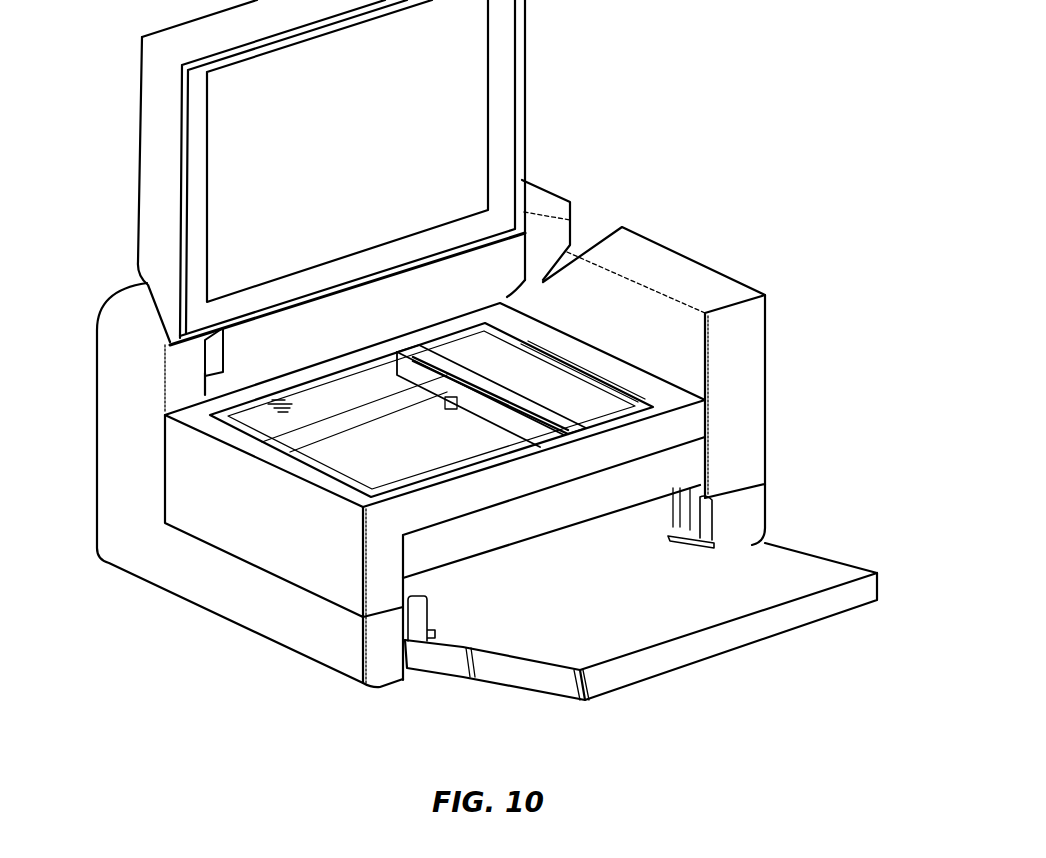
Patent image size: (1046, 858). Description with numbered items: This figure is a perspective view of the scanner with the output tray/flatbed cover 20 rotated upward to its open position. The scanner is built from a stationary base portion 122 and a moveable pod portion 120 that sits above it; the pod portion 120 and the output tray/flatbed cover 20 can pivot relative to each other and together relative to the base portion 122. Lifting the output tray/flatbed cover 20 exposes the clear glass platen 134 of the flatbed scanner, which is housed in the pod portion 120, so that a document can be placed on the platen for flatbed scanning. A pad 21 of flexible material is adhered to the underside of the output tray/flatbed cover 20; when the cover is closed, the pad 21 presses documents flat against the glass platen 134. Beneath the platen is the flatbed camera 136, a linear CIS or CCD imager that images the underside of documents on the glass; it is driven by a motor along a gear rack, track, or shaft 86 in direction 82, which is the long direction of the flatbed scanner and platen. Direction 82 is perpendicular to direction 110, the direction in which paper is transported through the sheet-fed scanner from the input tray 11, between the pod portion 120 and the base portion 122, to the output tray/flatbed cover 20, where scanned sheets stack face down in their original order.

The output tray/flatbed cover 20 is at (527, 60).
The pad 21 is at (458, 172).
The gear rack, track, or shaft 86 is at (377, 425).
The clear glass platen 134 is at (278, 407).
The direction 82 is at (483, 422).
The camera 136 is at (556, 395).
The pod portion 120 is at (758, 372).
The base portion 122 is at (200, 574).
The direction 110 is at (607, 567).
The input tray 11 is at (745, 637).